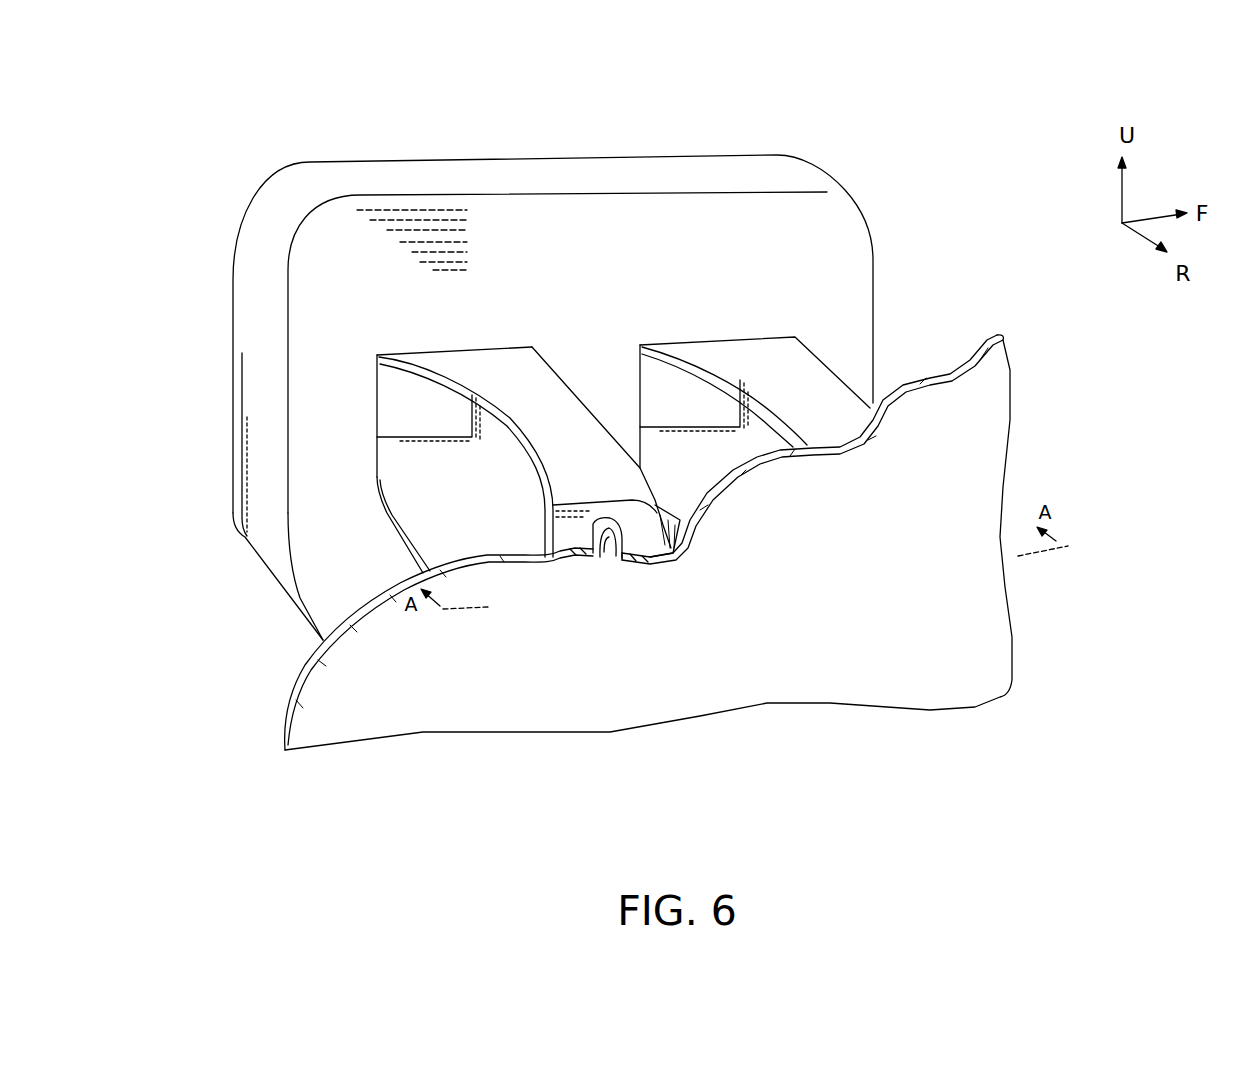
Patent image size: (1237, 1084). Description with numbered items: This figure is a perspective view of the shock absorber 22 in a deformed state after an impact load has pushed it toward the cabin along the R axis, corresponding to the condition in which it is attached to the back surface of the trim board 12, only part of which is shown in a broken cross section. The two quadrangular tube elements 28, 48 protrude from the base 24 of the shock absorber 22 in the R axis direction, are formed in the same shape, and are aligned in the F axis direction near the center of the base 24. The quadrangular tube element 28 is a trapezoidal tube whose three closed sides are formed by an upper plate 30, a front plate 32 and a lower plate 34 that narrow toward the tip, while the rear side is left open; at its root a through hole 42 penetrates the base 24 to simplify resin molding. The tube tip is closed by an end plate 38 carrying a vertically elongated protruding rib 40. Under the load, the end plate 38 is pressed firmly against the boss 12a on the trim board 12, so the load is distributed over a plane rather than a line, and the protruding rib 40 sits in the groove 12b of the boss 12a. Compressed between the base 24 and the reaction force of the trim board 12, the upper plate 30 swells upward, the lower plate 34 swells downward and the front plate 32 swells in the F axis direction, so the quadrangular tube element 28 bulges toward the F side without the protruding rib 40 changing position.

The trim board 12 is at (415, 735).
The boss 12a is at (588, 550).
The groove 12b is at (602, 553).
The shock absorber 22 is at (853, 151).
The base 24 is at (700, 163).
The quadrangular tube element 28 is at (508, 345).
The upper plate 30 is at (484, 363).
The front plate 32 is at (530, 470).
The lower plate 34 is at (420, 547).
The end plate 38 is at (690, 537).
The protruding rib 40 is at (617, 507).
The through hole 42 is at (390, 417).
The quadrangular tube element 48 is at (773, 333).